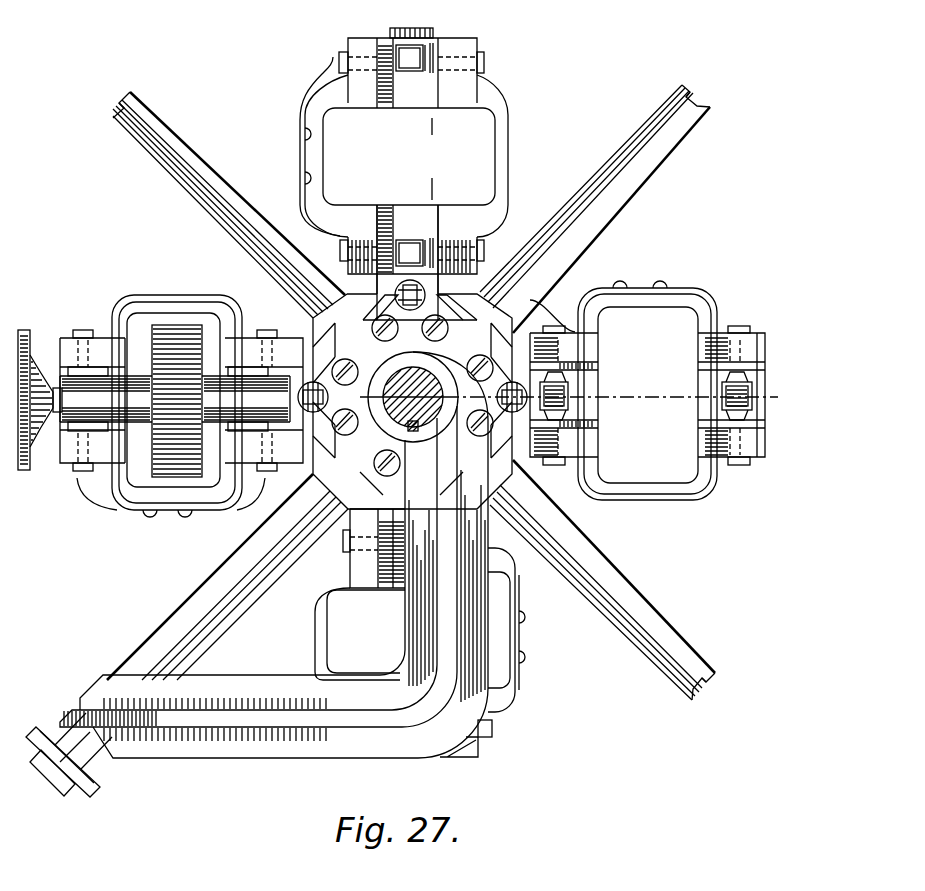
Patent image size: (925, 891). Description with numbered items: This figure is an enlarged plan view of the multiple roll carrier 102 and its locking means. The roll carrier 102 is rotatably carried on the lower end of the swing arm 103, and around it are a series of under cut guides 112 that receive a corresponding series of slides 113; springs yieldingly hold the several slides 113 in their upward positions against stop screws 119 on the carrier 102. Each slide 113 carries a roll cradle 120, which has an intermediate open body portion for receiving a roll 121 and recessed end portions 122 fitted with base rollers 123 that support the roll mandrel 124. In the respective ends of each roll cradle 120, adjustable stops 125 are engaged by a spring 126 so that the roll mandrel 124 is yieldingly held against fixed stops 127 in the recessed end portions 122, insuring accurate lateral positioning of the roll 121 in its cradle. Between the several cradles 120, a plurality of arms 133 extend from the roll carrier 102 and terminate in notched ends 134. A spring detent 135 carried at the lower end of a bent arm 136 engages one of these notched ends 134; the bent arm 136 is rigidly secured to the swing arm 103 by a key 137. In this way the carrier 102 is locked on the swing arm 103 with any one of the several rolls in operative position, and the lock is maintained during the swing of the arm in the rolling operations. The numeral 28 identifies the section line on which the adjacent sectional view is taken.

The shaft center line 28 is at (778, 394).
The multiple roll carrier 102 is at (505, 262).
The swing arm 103 is at (405, 382).
The under cut guides 112 is at (335, 283).
The slides 113 is at (300, 343).
The stop screws 119 is at (553, 297).
The roll cradles 120 is at (503, 134).
The roll 121 is at (155, 322).
The recessed end portions 122 is at (409, 156).
The base rollers 123 is at (718, 394).
The roll mandrel 124 is at (105, 392).
The adjustable stops 125 is at (563, 372).
The spring 126 is at (696, 293).
The fixed stops 127 is at (703, 422).
The arms 133 is at (164, 136).
The notched ends 134 is at (115, 101).
The spring detent 135 is at (140, 695).
The bent arm 136 is at (267, 750).
The key 137 is at (390, 430).